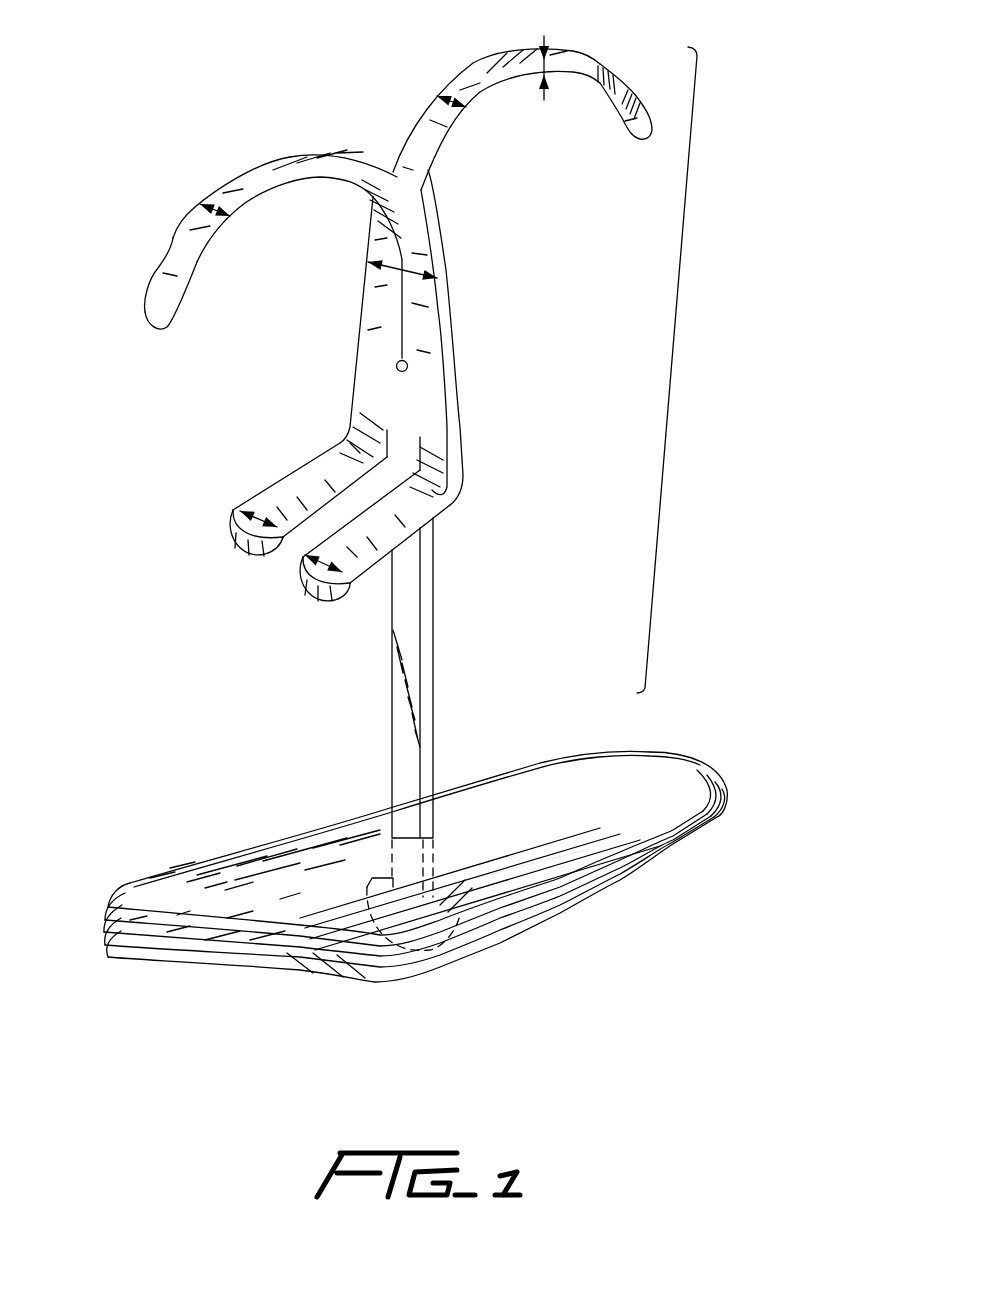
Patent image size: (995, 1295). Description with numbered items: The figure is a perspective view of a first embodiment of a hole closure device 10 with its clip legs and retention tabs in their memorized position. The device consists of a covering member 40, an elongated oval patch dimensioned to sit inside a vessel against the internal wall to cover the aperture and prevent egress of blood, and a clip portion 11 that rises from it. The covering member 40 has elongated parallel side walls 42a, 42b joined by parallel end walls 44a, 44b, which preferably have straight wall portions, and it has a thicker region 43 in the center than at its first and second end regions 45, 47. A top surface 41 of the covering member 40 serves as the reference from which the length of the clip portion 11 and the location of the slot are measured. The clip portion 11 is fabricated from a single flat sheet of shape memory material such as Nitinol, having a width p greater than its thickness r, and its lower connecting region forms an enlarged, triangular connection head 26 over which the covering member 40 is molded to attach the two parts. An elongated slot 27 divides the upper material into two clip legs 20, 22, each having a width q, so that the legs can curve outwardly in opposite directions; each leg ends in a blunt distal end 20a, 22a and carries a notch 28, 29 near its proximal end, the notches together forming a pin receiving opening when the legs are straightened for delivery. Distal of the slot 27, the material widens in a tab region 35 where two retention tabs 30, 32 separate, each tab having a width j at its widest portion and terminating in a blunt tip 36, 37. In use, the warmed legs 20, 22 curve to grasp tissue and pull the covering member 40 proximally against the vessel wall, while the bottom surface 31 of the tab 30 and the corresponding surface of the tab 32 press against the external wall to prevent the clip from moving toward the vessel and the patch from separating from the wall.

The hole closure device 10 is at (408, 519).
The clip portion 11 is at (680, 375).
The clip leg 20 is at (231, 251).
The blunt distal end 20a is at (158, 322).
The notch 28 is at (170, 256).
The clip leg 22 is at (522, 100).
The blunt distal end 22a is at (641, 143).
The notch 29 is at (625, 80).
The elongated slot 27 is at (404, 334).
The width p is at (412, 264).
The width q is at (216, 214).
The thickness r is at (544, 40).
The tab region 35 is at (432, 443).
The retention tab 30 is at (276, 520).
The bottom surface 31 is at (287, 541).
The blunt tip 36 is at (243, 558).
The retention tab 32 is at (375, 576).
The blunt tip 37 is at (324, 597).
The width j is at (240, 516).
The covering member 40 is at (408, 876).
The top surface 41 is at (521, 829).
The side wall 42a is at (312, 830).
The side wall 42b is at (575, 862).
The thicker region 43 is at (395, 892).
The end wall 44a is at (692, 760).
The end wall 44b is at (140, 928).
The first end region 45 is at (410, 923).
The second end region 47 is at (719, 813).
The connection head 26 is at (428, 938).